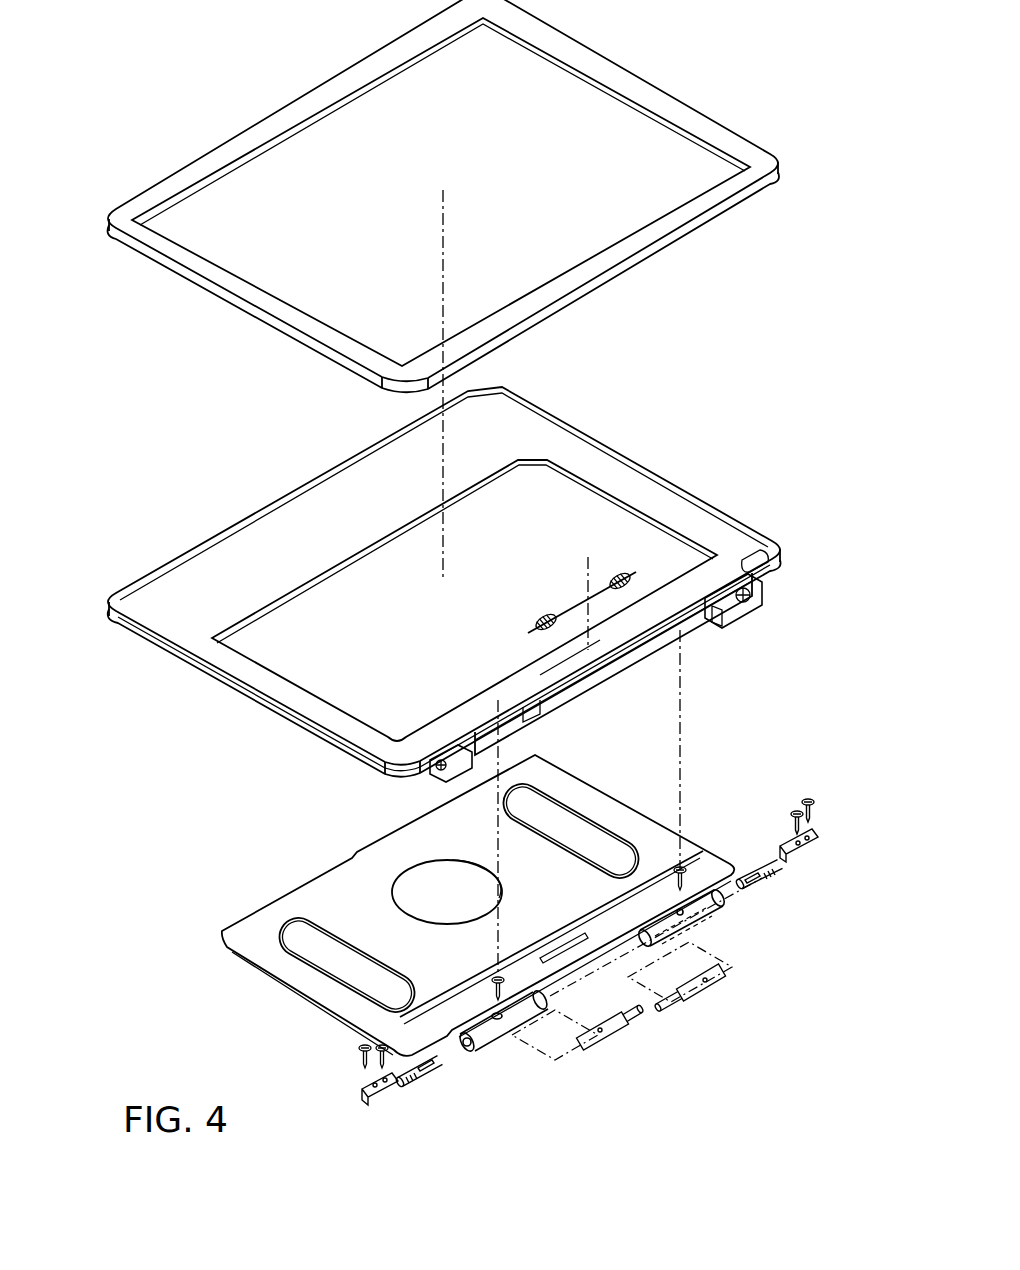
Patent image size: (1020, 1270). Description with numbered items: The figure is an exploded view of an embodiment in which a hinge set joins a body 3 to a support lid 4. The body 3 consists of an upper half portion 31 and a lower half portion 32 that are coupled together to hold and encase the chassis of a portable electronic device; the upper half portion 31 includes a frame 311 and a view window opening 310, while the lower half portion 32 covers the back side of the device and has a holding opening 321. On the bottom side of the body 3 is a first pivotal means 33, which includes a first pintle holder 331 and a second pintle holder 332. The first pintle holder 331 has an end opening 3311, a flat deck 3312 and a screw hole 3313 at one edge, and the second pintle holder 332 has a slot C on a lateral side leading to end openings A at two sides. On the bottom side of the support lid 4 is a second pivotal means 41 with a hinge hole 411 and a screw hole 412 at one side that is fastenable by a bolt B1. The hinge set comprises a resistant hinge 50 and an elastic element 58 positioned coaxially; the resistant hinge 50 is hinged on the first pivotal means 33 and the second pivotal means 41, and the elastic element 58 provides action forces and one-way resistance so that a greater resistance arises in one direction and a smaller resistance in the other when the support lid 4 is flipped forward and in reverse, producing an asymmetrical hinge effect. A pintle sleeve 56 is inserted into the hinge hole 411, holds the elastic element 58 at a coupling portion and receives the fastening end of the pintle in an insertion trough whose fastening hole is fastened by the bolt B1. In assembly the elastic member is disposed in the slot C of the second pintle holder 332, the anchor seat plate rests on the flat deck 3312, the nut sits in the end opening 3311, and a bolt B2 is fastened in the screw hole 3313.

The body 3 is at (193, 390).
The upper half portion 31 is at (206, 298).
The view window opening 310 is at (606, 110).
The frame 311 is at (678, 106).
The lower half portion 32 is at (261, 491).
The holding opening 321 is at (609, 508).
The first pivotal means 33 is at (598, 763).
The first pintle holder 331 is at (758, 613).
The end opening 3311 is at (720, 620).
The flat deck 3312 is at (738, 558).
The screw hole 3313 is at (758, 604).
The second pintle holder 332 is at (615, 680).
The support lid 4 is at (243, 970).
The second pivotal means 41 is at (485, 1052).
The hinge hole 411 is at (465, 1054).
The screw hole 412 is at (508, 1020).
The resistant hinge 50 is at (773, 883).
The pintle sleeve 56 is at (601, 1033).
The elastic element 58 is at (571, 608).
The end openings A is at (538, 720).
The bolt B1 is at (683, 872).
The bolt B2 is at (360, 1058).
The slot C is at (558, 670).